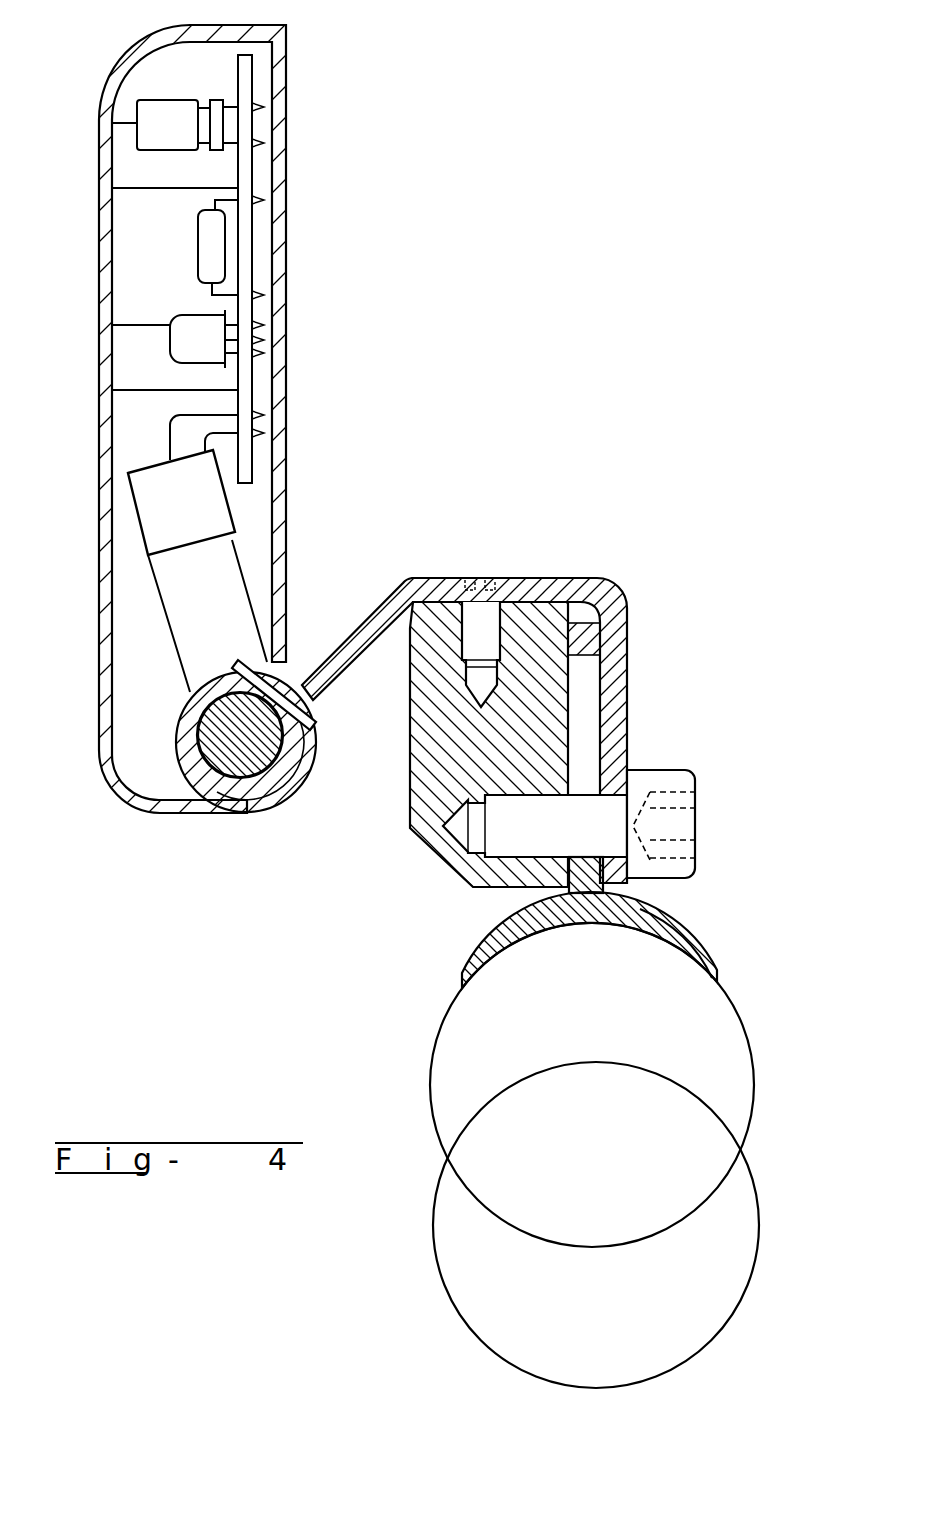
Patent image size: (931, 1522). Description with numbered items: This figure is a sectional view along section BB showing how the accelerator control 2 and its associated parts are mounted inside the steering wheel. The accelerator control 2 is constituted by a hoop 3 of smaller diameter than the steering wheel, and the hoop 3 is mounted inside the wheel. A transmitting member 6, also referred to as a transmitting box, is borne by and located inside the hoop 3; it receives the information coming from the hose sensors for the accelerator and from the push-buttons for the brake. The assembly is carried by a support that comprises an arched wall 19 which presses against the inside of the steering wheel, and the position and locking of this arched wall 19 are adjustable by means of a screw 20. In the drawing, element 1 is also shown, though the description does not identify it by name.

The roller / wheel 1 is at (700, 1005).
The accelerator control 2 is at (210, 777).
The hoop 3 is at (300, 783).
The transmitting member 6 is at (107, 405).
The arched wall 19 is at (645, 912).
The screw 20 is at (663, 817).